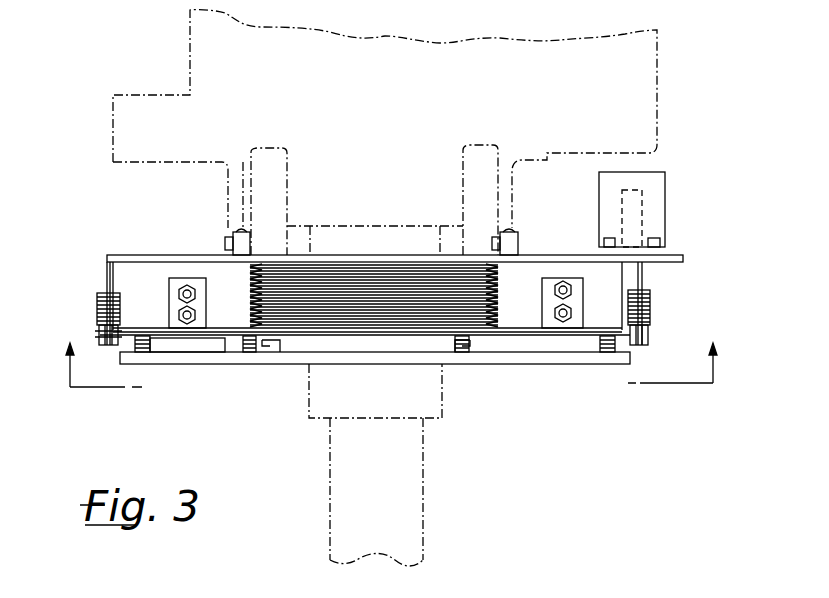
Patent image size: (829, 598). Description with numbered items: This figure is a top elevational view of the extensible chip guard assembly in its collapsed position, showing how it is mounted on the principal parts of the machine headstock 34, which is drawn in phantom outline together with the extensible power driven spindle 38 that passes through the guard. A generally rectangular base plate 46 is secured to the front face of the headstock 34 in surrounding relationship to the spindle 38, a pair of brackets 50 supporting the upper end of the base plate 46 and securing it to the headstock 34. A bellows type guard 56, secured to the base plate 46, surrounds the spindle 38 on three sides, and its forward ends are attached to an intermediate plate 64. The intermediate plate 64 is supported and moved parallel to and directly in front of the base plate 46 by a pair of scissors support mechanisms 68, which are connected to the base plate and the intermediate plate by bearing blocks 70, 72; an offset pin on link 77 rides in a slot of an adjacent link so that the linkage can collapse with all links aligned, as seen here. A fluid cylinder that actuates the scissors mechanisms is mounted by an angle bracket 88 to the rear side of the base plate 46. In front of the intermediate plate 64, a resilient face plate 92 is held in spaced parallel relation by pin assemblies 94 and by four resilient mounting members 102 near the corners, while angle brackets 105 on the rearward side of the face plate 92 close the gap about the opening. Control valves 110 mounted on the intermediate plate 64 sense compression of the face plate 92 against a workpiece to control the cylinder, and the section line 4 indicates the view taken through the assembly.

The headstock 34 is at (641, 52).
The angle bracket 88 is at (657, 183).
The base plate 46 is at (672, 258).
The brackets 50 is at (233, 242).
The bellows type guard 56 is at (498, 276).
The control valves 110 is at (172, 282).
The bearing block 70 is at (106, 270).
The scissors support mechanisms 68 is at (97, 294).
The bearing block 72 is at (98, 305).
The link 77 is at (97, 334).
The pin assemblies 94 is at (630, 345).
The intermediate plate 64 is at (570, 356).
The resilient mounting members 102 is at (167, 348).
The face plate 92 is at (200, 359).
The angle brackets 105 is at (285, 350).
The spindle 38 is at (330, 418).
The section line 4 is at (387, 385).